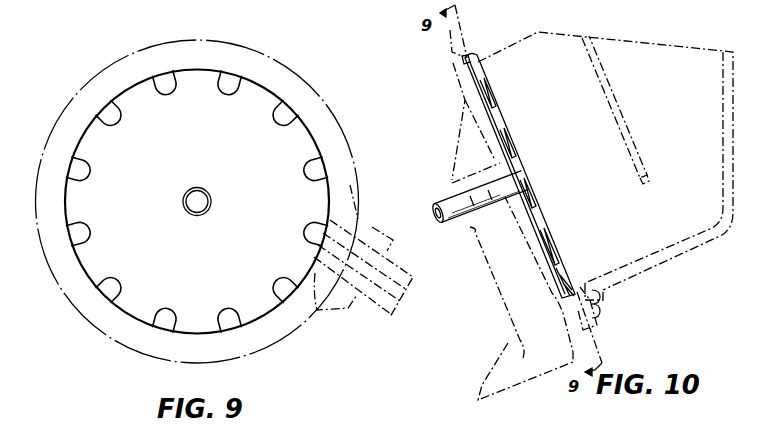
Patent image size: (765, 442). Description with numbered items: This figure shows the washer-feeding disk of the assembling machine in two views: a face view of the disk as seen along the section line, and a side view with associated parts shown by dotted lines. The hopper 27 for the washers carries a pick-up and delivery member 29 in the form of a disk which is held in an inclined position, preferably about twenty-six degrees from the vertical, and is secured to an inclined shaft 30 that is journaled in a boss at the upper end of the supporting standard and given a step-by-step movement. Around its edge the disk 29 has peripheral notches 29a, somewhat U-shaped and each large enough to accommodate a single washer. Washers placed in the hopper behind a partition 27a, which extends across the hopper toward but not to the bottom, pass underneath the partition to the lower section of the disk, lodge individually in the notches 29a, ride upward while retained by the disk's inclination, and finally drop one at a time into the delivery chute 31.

In FIG. 10, the hopper 27 is at (668, 267).
In FIG. 10, the partition 27a is at (603, 72).
In FIG. 9, the pick-up and delivery member 29 is at (84, 265).
In FIG. 10, the pick-up and delivery member 29 is at (495, 120).
In FIG. 9, the peripheral notches 29a is at (112, 288).
In FIG. 10, the inclined shaft 30 is at (445, 229).
In FIG. 9, the delivery chute 31 is at (388, 320).